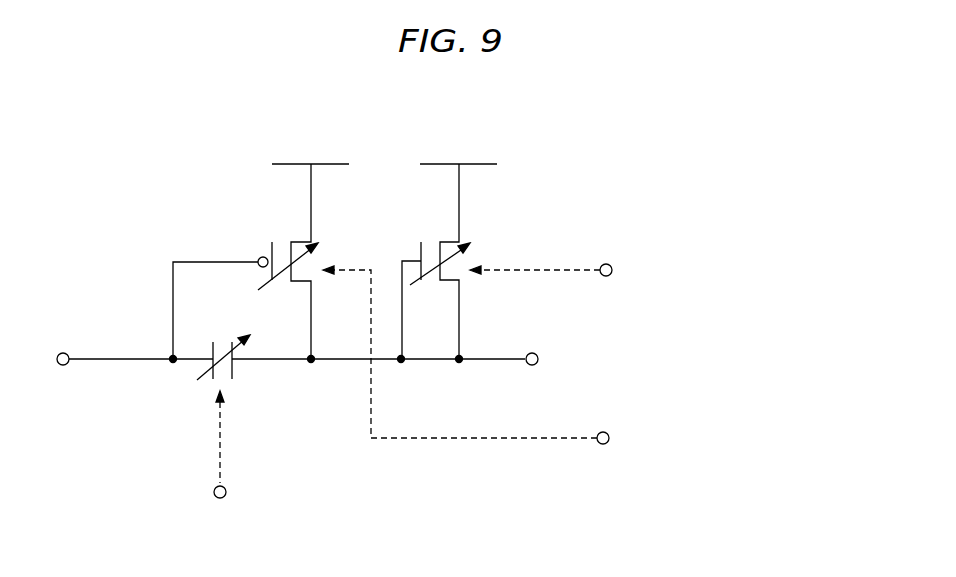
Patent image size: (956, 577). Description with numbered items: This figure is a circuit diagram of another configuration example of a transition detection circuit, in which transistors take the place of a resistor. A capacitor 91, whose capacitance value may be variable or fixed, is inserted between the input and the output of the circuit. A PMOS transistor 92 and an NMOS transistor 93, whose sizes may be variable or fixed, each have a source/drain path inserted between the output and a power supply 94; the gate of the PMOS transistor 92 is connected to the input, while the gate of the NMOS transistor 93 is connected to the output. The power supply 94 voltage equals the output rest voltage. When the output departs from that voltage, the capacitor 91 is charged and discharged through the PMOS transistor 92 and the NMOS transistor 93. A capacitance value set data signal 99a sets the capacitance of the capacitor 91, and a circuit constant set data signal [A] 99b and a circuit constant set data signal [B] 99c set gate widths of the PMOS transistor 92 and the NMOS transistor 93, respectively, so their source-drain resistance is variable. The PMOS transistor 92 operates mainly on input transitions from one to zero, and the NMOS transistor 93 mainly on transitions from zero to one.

The capacitor 91 is at (236, 368).
The PMOS transistor 92 is at (301, 238).
The NMOS transistor 93 is at (449, 238).
The power supply 94 is at (321, 163).
The capacitance value set data signal 99a is at (118, 524).
The circuit constant set data signal [A] 99b is at (727, 420).
The circuit constant set data signal [B] 99c is at (724, 252).